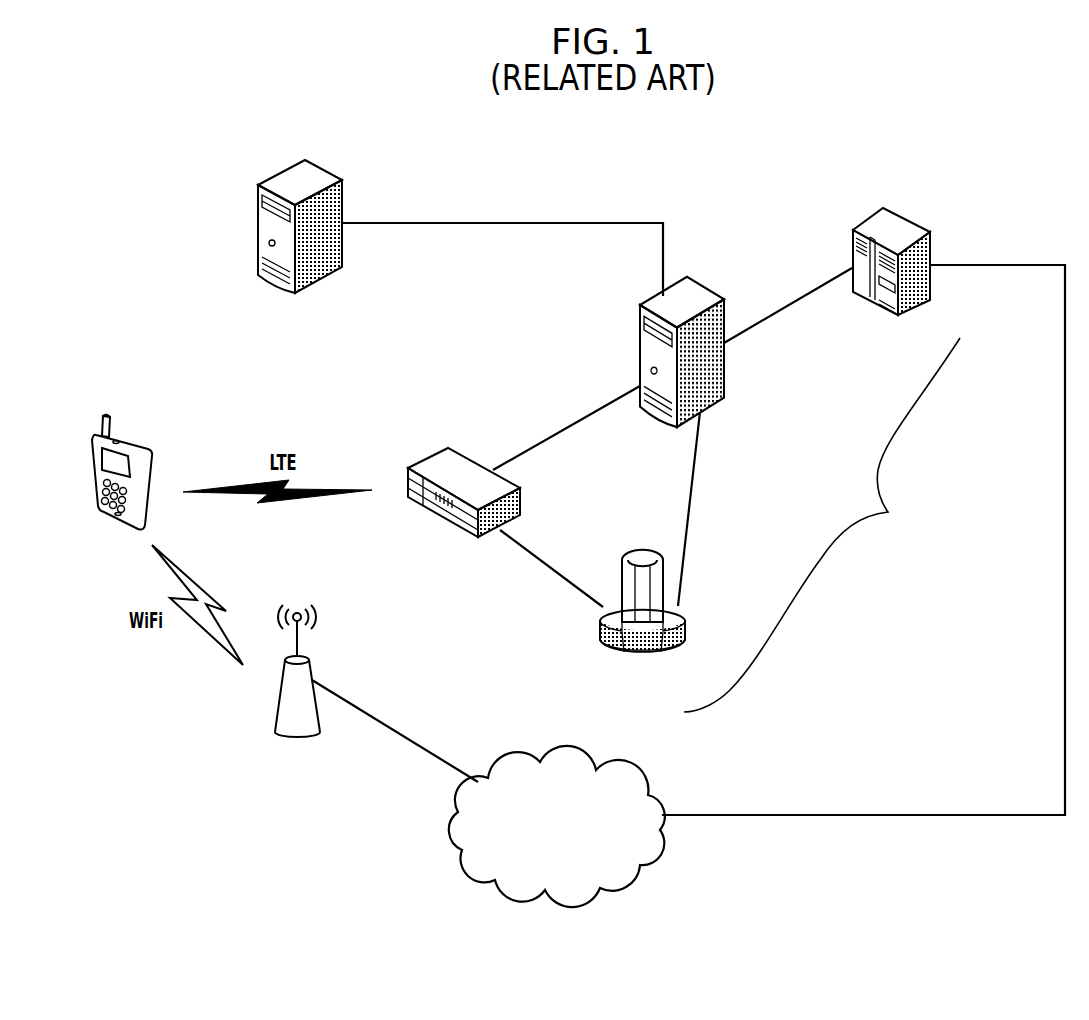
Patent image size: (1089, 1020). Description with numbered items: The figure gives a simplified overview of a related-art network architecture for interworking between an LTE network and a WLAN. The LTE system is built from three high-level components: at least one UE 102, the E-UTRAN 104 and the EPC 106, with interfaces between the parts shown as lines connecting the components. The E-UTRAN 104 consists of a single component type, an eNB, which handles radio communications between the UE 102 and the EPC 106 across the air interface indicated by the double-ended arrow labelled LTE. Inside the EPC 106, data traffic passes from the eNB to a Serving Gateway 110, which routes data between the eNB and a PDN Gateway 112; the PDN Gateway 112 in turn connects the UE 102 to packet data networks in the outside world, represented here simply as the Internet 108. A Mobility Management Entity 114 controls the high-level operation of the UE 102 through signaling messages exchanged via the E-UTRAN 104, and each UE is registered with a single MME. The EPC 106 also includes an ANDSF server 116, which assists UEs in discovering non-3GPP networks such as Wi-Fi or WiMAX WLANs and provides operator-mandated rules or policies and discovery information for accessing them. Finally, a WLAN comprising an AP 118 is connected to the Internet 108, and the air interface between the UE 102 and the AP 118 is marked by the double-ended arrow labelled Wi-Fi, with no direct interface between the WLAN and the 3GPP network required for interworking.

The UE 102 is at (133, 437).
The E-UTRAN 104 is at (456, 448).
The EPC 106 is at (822, 525).
The Packet Data Network (Internet) 108 is at (660, 797).
The Serving Gateway (S-GW) 110 is at (706, 290).
The PDN Gateway (P-GW) 112 is at (912, 218).
The Mobility Management Entity (MME) 114 is at (683, 613).
The ANDSF server 116 is at (310, 168).
The AP 118 is at (314, 662).